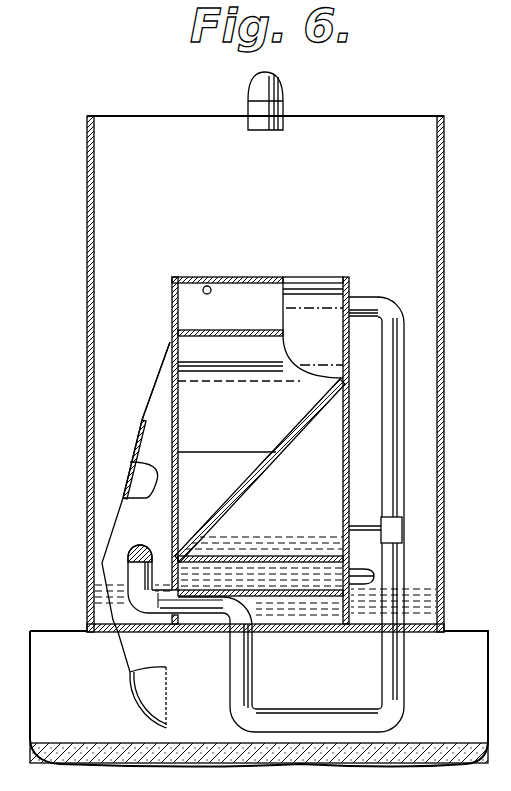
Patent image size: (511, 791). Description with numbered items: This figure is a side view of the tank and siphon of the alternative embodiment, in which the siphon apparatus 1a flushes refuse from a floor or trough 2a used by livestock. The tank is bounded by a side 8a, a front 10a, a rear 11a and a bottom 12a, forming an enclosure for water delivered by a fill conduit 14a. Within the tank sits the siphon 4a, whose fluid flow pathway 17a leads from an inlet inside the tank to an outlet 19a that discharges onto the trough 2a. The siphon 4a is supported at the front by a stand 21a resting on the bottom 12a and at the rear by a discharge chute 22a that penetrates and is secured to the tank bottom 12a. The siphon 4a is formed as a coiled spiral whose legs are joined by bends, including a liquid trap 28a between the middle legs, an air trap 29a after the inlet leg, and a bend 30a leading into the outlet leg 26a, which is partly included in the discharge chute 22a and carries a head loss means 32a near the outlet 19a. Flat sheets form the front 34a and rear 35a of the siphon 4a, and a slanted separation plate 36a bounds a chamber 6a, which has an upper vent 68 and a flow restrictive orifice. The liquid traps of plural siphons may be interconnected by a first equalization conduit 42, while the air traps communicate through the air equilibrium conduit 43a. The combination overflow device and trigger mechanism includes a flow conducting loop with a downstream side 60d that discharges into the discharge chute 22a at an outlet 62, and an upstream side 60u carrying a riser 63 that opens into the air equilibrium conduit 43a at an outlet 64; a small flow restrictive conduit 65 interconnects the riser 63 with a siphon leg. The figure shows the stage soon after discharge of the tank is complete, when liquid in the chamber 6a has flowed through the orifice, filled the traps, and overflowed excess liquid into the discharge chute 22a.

The siphon apparatus 1a is at (453, 141).
The trough 2a is at (428, 745).
The siphon 4a is at (292, 278).
The chamber 6a is at (345, 481).
The side of tank 8a is at (168, 121).
The front of tank 10a is at (444, 276).
The rear of tank 11a is at (87, 231).
The tank bottom 12a is at (217, 632).
The fill conduit 14a is at (250, 84).
The fluid flow pathway 17a is at (185, 320).
The outlet 19a is at (164, 718).
The stand 21a is at (337, 615).
The discharge chute 22a is at (150, 411).
The outlet leg 26a is at (140, 463).
The liquid trap 28a is at (340, 546).
The air trap 29a is at (205, 286).
The bend 30a is at (216, 345).
The head loss means 32a is at (150, 699).
The front of siphon 34a is at (350, 511).
The rear of siphon 35a is at (172, 344).
The separation plate 36a is at (278, 440).
The first equalization conduit 42 is at (378, 578).
The air equilibrium conduit 43a is at (366, 297).
The downstream side of trap 60d is at (250, 684).
The upstream side of trap 60u is at (406, 684).
The outlet 62 is at (158, 535).
The riser 63 is at (410, 418).
The outlet 64 is at (386, 300).
The flow restrictive conduit 65 is at (372, 528).
The upper vent 68 is at (325, 390).